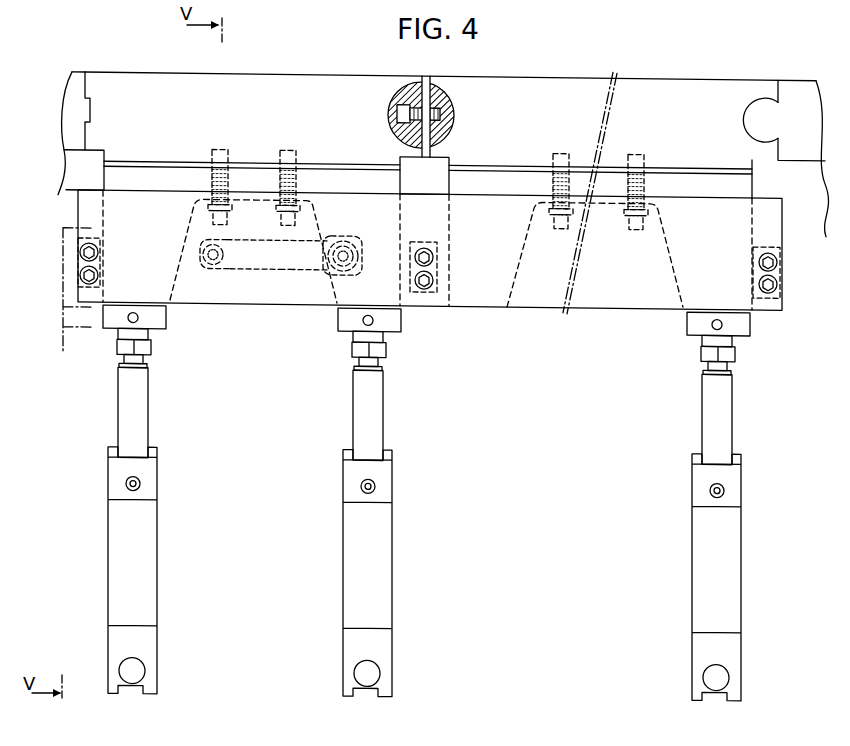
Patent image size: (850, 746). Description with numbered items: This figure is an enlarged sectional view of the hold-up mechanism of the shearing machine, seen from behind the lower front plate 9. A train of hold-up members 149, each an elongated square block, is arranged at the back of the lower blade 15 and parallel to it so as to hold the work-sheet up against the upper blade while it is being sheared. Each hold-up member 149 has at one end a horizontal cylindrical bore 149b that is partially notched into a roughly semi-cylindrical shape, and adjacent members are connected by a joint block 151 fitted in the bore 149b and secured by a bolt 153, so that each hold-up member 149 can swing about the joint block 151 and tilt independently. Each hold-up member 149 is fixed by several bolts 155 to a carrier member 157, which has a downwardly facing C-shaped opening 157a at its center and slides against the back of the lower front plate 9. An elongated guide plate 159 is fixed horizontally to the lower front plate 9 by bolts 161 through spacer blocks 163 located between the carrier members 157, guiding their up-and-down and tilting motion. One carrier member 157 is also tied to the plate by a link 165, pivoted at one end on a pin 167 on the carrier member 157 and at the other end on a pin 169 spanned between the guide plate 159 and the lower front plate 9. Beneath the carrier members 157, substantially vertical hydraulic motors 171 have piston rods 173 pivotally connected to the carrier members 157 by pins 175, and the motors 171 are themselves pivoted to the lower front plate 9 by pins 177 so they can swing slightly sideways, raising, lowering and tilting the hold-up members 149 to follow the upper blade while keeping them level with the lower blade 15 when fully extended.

The lower front plate 9 is at (72, 173).
The lower blade 15 is at (70, 115).
The hold-up member 149 is at (295, 85).
The horizontal cylindrical bore 149b is at (391, 105).
The joint block 151 is at (414, 84).
The bolt 153 is at (441, 102).
The bolt 155 is at (282, 182).
The carrier member 157 is at (426, 253).
The C-shaped opening 157a is at (338, 287).
The guide plate 159 is at (283, 302).
The bolt 161 is at (100, 275).
The spacer block 163 is at (100, 238).
The link 165 is at (281, 269).
The pin 167 is at (352, 241).
The pin 169 is at (263, 271).
The hydraulic motor 171 is at (150, 558).
The piston rod 173 is at (140, 410).
The pin 175 is at (138, 318).
The pin 177 is at (139, 672).